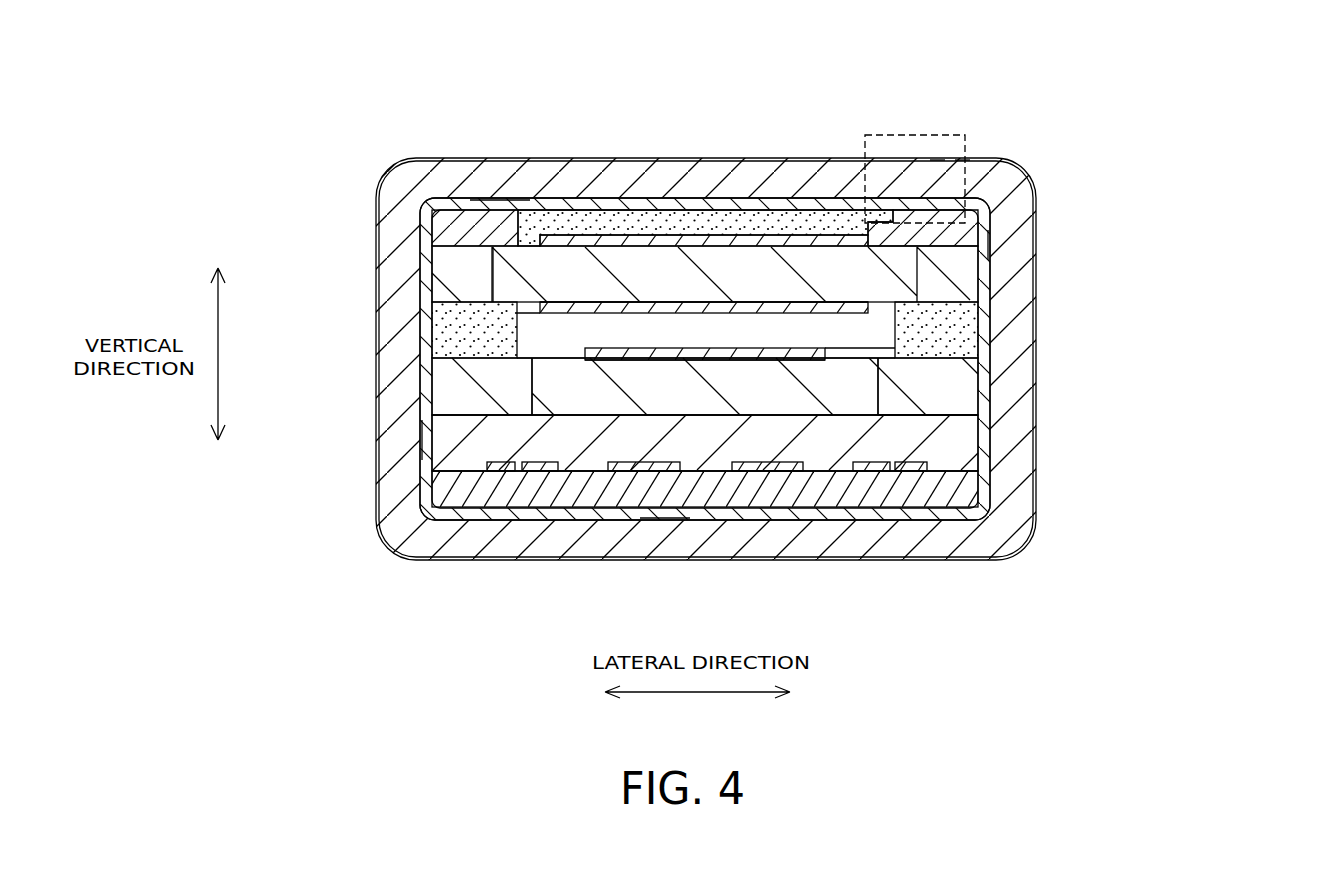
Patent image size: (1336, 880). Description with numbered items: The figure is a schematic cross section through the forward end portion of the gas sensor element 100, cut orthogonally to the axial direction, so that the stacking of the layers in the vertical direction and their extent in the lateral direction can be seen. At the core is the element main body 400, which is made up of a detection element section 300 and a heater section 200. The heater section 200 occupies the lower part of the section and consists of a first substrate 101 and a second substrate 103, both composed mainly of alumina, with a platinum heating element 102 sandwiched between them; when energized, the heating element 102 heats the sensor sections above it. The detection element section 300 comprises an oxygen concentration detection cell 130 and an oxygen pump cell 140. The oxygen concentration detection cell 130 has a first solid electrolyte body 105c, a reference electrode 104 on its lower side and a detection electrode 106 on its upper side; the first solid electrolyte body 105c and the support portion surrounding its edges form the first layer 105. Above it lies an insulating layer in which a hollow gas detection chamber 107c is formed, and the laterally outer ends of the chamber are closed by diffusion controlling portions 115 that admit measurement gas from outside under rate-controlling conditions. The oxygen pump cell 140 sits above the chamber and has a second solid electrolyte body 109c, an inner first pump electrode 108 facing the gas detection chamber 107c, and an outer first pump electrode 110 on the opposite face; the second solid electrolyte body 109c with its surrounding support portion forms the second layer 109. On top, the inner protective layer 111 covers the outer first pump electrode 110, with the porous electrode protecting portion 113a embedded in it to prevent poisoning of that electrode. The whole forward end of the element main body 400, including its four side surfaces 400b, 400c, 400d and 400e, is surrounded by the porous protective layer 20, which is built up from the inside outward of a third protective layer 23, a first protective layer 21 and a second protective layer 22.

The gas sensor element 100 is at (779, 108).
The porous protective layer 20 is at (911, 143).
The first protective layer 21 is at (962, 157).
The second protective layer 22 is at (937, 157).
The third protective layer 23 is at (1000, 160).
The element main body 400 is at (1267, 300).
The side surface 400b is at (497, 209).
The side surface 400c is at (662, 510).
The side surface 400d is at (430, 438).
The side surface 400e is at (990, 235).
The inner protective layer 111 is at (476, 226).
The electrode protecting portion 113a is at (597, 222).
The outer first pump electrode 110 is at (905, 247).
The second layer 109 is at (883, 273).
The second solid electrolyte body 109c is at (530, 275).
The inner first pump electrode 108 is at (850, 303).
The oxygen pump cell 140 is at (1153, 215).
The diffusion controlling portion 115 is at (452, 327).
The gas detection chamber 107c is at (552, 342).
The detection electrode 106 is at (775, 356).
The first layer 105 is at (865, 388).
The first solid electrolyte body 105c is at (680, 395).
The reference electrode 104 is at (775, 402).
The oxygen concentration detection cell 130 is at (1153, 333).
The detection element section 300 is at (1212, 245).
The second substrate 103 is at (962, 435).
The heating element 102 is at (928, 466).
The first substrate 101 is at (960, 492).
The heater section 200 is at (1208, 430).